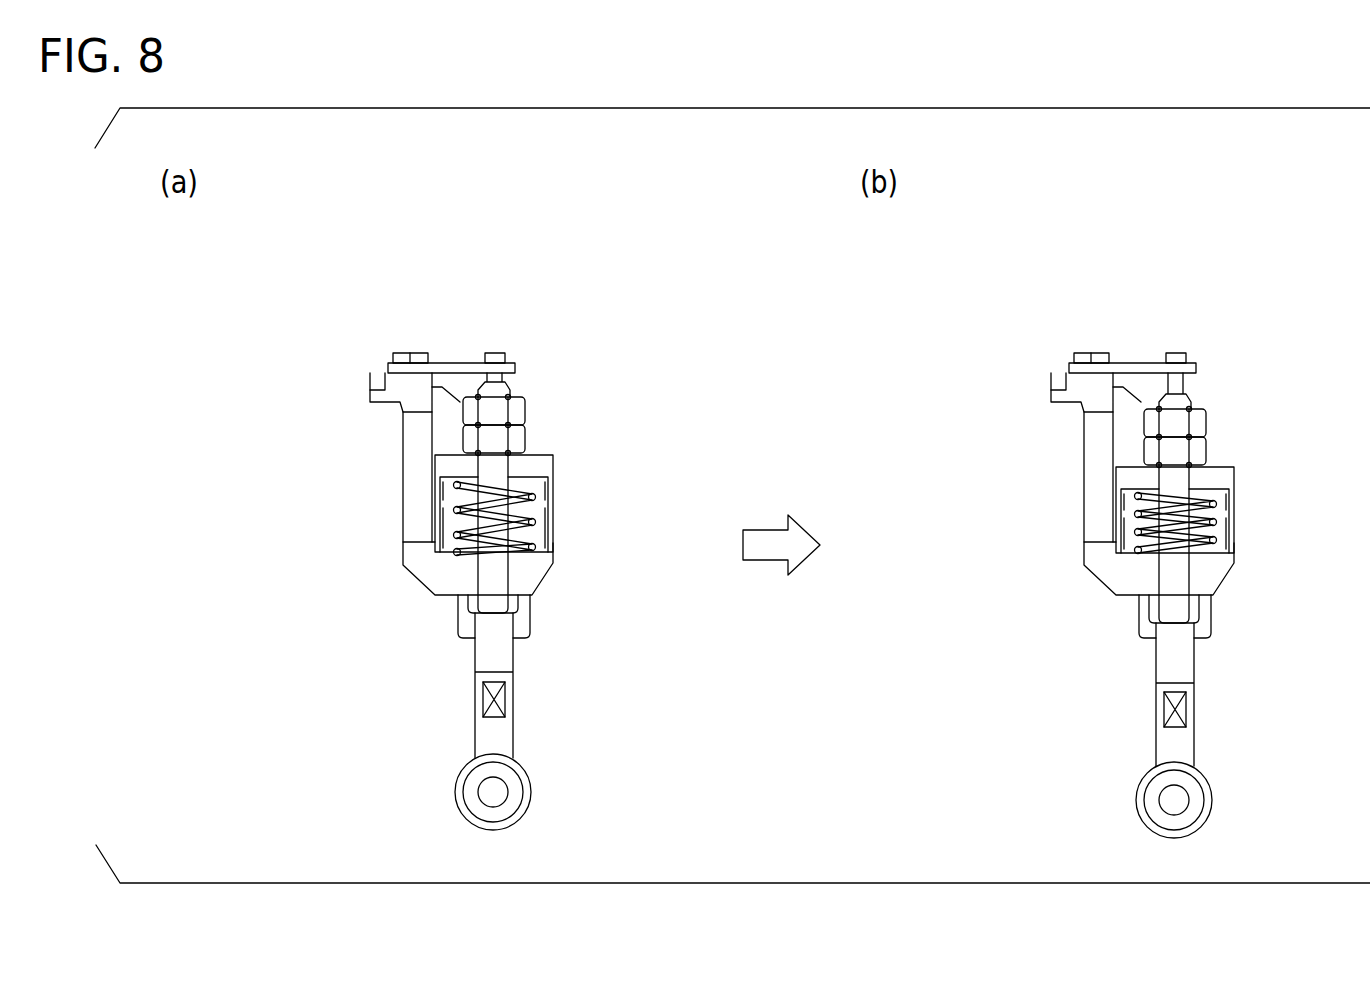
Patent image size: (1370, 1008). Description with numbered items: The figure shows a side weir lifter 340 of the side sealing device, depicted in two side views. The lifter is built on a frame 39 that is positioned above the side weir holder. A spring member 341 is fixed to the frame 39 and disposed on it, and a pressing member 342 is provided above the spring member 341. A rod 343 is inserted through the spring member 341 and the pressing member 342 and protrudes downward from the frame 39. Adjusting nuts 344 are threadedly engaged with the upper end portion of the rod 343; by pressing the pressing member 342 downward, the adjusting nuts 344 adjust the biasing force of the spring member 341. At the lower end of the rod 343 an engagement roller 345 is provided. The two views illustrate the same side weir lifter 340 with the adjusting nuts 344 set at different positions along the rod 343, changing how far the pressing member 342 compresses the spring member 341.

The side weir lifter 340 is at (326, 333).
The frame 39 is at (415, 561).
The spring member 341 is at (533, 522).
The pressing member 342 is at (540, 470).
The rod 343 is at (503, 652).
The adjusting nuts 344 is at (518, 412).
The engagement roller 345 is at (532, 788).